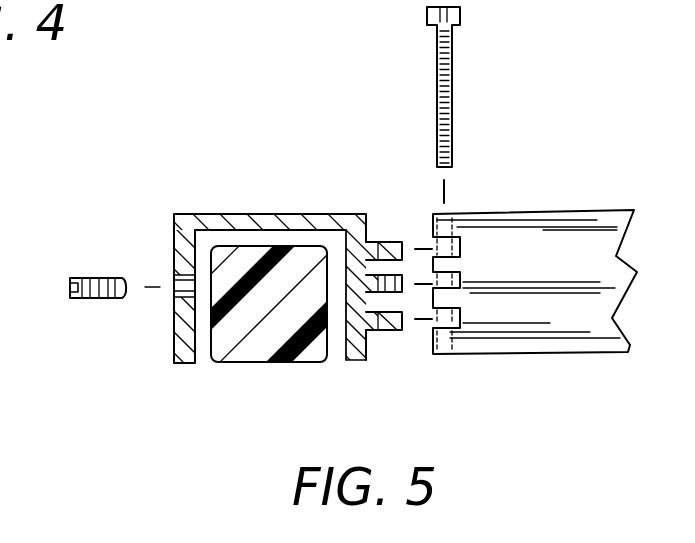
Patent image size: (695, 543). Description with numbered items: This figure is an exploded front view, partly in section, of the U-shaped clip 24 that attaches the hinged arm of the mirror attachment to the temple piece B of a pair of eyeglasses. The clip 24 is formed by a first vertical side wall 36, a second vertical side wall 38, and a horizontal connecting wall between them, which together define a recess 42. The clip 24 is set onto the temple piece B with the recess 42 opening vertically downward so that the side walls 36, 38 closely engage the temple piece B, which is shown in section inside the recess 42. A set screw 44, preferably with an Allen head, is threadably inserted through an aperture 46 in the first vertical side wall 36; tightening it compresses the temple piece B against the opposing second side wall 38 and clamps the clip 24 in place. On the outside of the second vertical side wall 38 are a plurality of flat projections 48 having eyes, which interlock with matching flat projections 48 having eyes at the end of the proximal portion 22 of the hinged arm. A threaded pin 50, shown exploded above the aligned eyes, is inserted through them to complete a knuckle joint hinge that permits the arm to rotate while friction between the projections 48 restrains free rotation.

The proximal portion 22 is at (553, 211).
The U-shaped clip 24 is at (372, 92).
The first vertical side wall 36 is at (173, 340).
The second vertical side wall 38 is at (370, 356).
The recess 42 is at (335, 356).
The set screw 44 is at (82, 277).
The aperture 46 is at (173, 262).
The flat projections 48 is at (399, 240).
The threaded pin 50 is at (449, 63).
The temple piece B is at (262, 363).